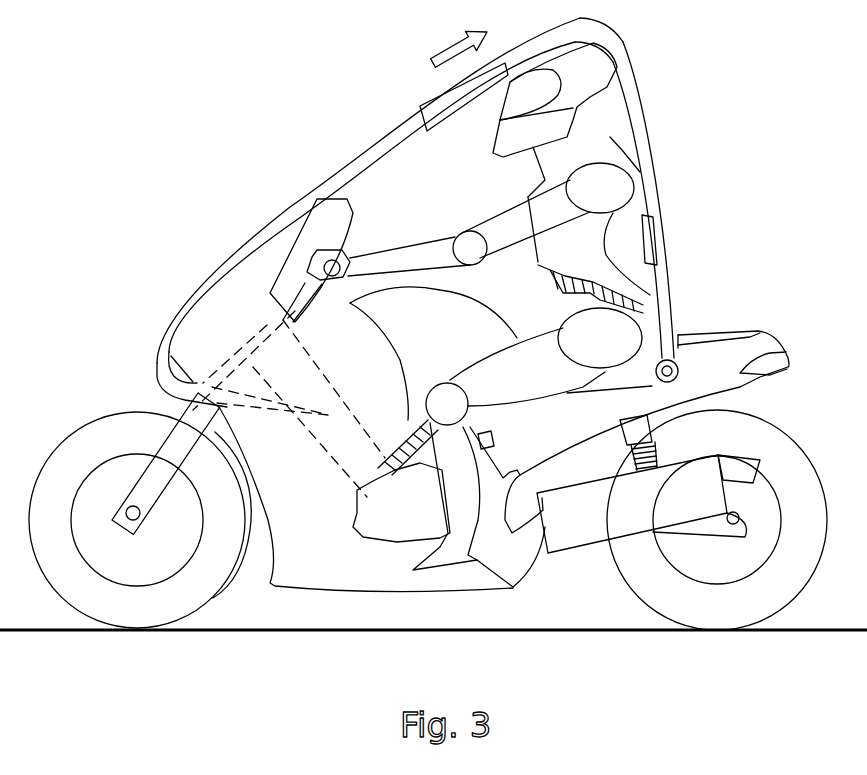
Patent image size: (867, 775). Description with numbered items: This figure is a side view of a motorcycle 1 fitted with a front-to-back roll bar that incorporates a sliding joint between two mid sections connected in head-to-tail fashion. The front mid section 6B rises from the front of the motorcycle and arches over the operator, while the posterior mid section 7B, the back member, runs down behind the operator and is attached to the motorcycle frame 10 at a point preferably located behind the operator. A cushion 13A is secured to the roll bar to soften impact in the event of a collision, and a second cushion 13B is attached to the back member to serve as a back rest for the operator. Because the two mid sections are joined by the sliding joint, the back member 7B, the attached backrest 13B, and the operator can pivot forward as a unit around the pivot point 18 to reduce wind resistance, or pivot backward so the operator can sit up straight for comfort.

The motorcycle 1 is at (438, 329).
The front mid section 6B is at (370, 143).
The posterior mid section 7B is at (628, 37).
The motorcycle frame 10 is at (357, 444).
The cushion 13A is at (666, 190).
The cushion 13B is at (633, 270).
The pivot point 18 is at (681, 371).